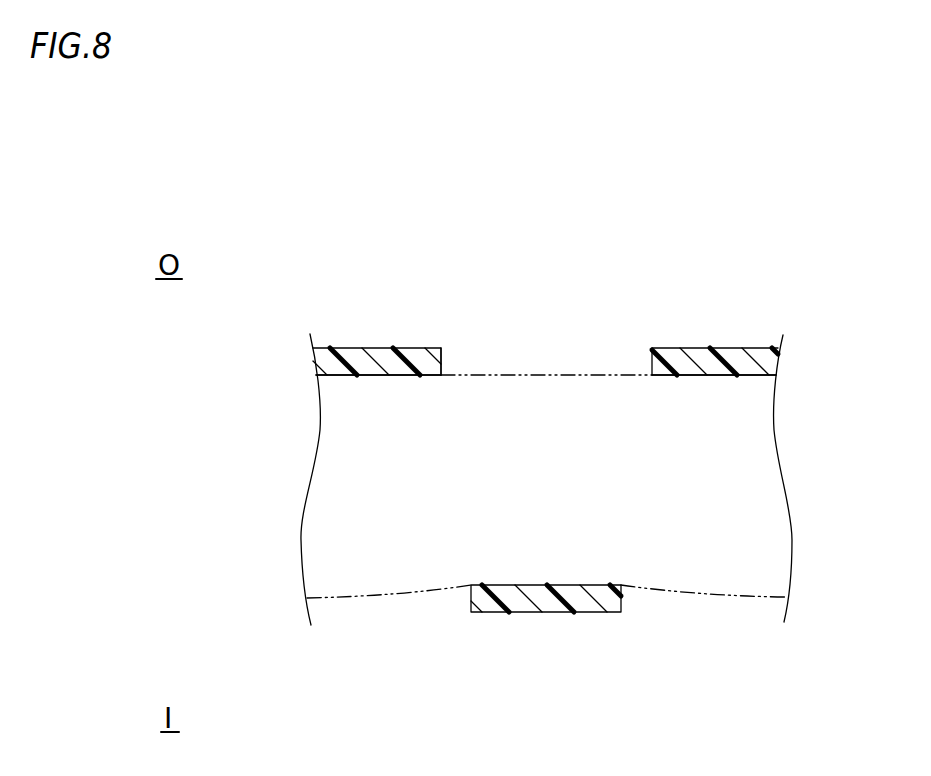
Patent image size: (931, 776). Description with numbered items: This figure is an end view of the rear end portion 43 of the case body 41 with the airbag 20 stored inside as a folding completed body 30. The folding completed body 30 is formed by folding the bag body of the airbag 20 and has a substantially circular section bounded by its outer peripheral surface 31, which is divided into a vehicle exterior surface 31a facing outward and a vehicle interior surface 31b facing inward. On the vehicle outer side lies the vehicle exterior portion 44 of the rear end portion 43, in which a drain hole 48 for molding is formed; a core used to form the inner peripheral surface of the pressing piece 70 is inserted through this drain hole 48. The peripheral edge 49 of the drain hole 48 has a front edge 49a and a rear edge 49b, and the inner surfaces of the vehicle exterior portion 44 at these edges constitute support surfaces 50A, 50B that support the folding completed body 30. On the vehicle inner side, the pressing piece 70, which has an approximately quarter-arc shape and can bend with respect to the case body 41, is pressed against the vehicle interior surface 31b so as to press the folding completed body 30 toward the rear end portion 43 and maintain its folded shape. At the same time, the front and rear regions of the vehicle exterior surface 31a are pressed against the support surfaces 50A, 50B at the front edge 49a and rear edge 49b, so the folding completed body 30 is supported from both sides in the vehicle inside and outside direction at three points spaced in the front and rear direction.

The airbag 20 is at (386, 541).
The folding completed body 30 is at (371, 617).
The outer peripheral surface 31 is at (618, 462).
The vehicle exterior surface 31a is at (544, 372).
The vehicle interior surface 31b is at (716, 598).
The case body 41 is at (794, 404).
The rear end portion 43 is at (775, 315).
The vehicle exterior portion 44 is at (388, 333).
The drain hole 48 is at (644, 345).
The peripheral edge 49 is at (596, 287).
The front edge 49a is at (446, 356).
The rear edge 49b is at (648, 350).
The first seal lower face 50A is at (420, 376).
The second seal lower face 50B is at (672, 376).
The pressing piece 70 is at (545, 617).